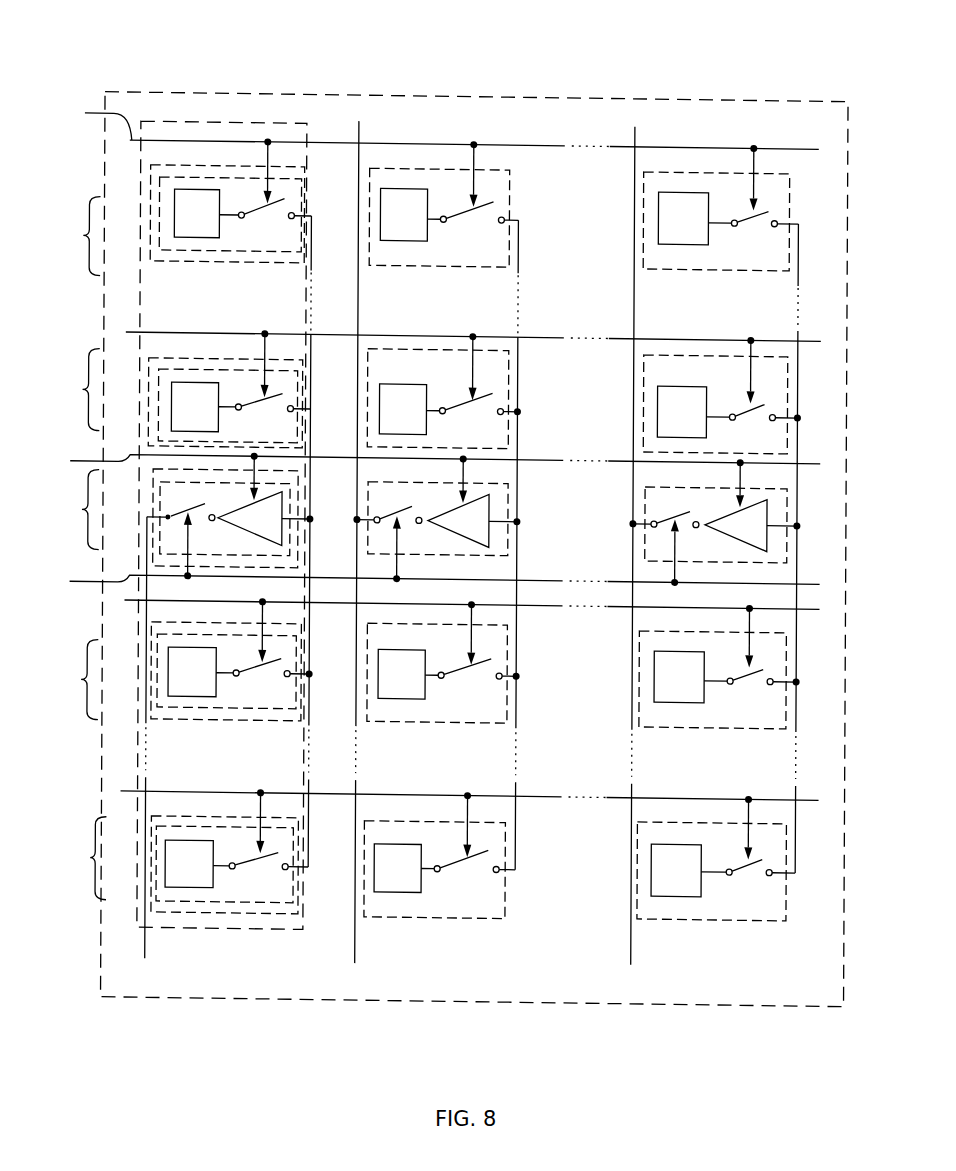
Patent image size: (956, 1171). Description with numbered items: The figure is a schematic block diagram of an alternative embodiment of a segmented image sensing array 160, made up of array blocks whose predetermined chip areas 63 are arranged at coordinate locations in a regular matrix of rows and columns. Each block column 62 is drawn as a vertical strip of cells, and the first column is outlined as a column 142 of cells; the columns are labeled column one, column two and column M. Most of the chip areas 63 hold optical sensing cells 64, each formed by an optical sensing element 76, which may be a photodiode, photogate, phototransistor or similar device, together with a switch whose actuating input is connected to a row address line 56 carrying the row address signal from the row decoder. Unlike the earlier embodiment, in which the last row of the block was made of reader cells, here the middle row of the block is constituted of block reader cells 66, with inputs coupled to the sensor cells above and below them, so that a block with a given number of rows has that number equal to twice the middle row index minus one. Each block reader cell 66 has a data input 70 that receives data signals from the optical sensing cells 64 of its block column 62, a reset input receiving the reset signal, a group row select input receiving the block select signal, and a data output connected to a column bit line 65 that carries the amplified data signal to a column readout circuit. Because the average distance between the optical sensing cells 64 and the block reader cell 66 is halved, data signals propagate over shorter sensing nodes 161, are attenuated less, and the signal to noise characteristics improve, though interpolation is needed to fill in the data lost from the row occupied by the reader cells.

The segmented image sensing array 160 is at (95, 57).
The block column 62 is at (519, 92).
The column of pixels 142 is at (222, 121).
The row address line 56 is at (813, 334).
The predetermined chip areas 63 is at (374, 165).
The optical sensing cell 64 is at (231, 548).
The optical sensing element 76 is at (232, 250).
The block reader cell 66 is at (250, 516).
The data input 70 is at (290, 516).
The column bit line 65 is at (147, 955).
The sensing nodes 161 is at (305, 776).